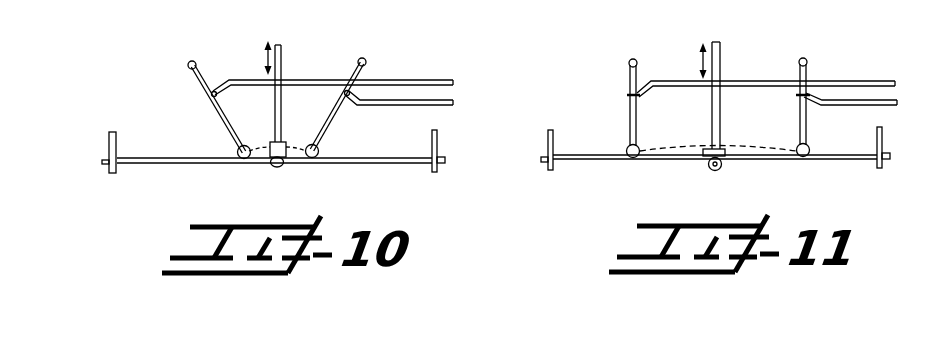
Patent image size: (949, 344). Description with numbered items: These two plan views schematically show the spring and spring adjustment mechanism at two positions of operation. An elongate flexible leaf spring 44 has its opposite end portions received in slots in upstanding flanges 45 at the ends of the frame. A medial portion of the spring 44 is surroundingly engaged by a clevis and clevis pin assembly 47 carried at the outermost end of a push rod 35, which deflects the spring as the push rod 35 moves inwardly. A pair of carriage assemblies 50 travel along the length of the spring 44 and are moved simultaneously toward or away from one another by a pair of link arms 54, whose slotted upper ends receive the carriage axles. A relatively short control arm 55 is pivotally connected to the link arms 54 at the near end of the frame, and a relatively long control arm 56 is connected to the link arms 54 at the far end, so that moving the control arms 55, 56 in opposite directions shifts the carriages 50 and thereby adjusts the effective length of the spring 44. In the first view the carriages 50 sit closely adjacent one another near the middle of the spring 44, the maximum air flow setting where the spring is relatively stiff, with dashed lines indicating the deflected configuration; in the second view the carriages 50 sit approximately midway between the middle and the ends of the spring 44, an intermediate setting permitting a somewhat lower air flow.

In FIG. 10, the push rod 35 is at (284, 52).
In FIG. 11, the push rod 35 is at (722, 50).
In FIG. 10, the leaf spring 44 is at (393, 164).
In FIG. 11, the leaf spring 44 is at (841, 160).
In FIG. 10, the upstanding flanges 45 is at (104, 150).
In FIG. 11, the upstanding flanges 45 is at (547, 160).
In FIG. 10, the clevis and clevis pin assembly 47 is at (279, 169).
In FIG. 11, the clevis and clevis pin assembly 47 is at (708, 171).
In FIG. 10, the carriage assembly 50 is at (234, 169).
In FIG. 11, the carriage assembly 50 is at (623, 167).
In FIG. 10, the link arms 54 is at (227, 126).
In FIG. 11, the link arms 54 is at (638, 102).
In FIG. 10, the short control arm 55 is at (454, 104).
In FIG. 11, the short control arm 55 is at (898, 104).
In FIG. 10, the long control arm 56 is at (430, 80).
In FIG. 11, the long control arm 56 is at (835, 81).